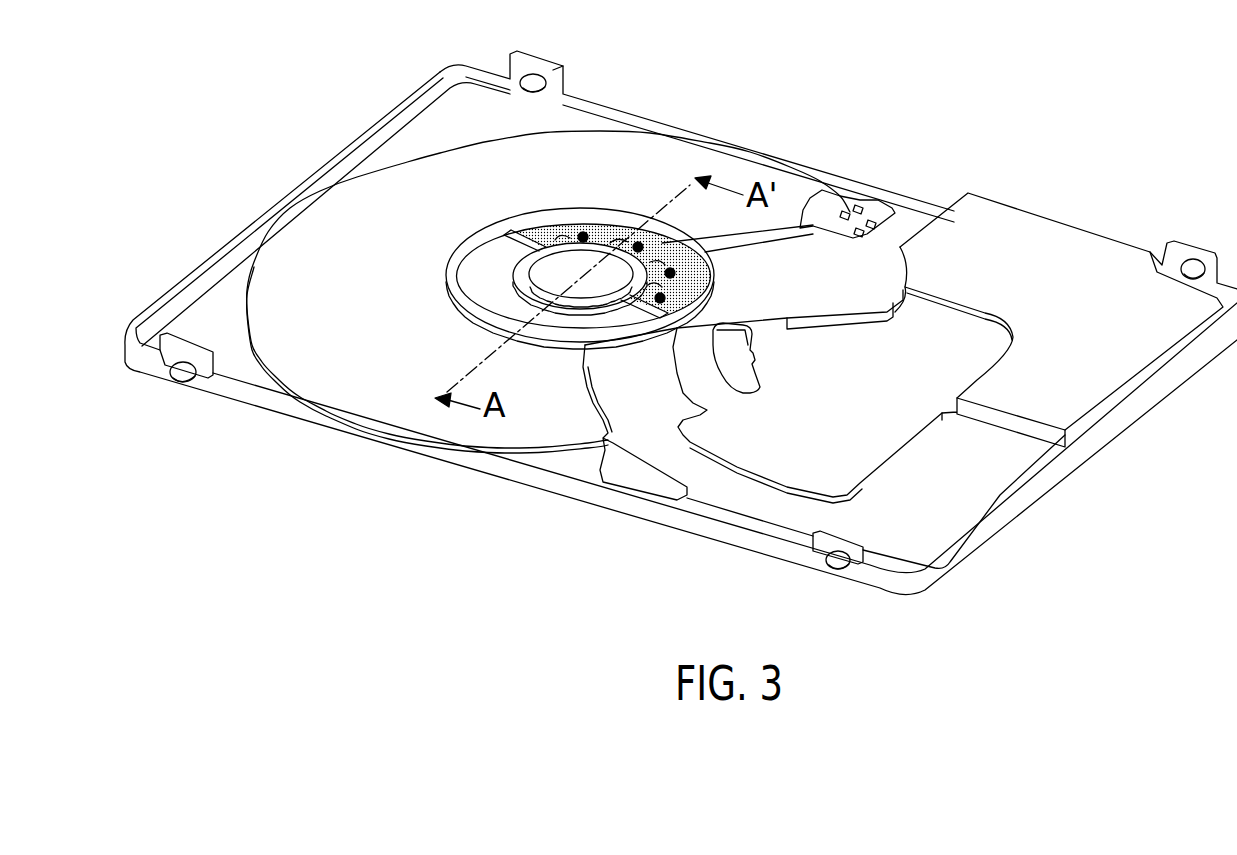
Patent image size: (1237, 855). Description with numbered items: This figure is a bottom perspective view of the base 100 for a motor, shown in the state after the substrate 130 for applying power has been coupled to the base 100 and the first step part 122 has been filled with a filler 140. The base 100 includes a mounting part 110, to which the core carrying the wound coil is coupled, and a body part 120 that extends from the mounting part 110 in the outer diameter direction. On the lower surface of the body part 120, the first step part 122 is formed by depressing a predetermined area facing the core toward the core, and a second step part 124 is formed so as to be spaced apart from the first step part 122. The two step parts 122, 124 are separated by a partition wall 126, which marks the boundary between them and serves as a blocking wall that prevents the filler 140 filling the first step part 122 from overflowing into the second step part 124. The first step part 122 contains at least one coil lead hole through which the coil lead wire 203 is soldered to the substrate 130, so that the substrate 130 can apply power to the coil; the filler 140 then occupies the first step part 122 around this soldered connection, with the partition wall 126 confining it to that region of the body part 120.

The base for a motor 100 is at (1017, 194).
The mounting part 110 is at (623, 265).
The body part 120 is at (390, 395).
The first step part 122 is at (600, 233).
The second step part 124 is at (488, 282).
The partition wall 126 is at (530, 230).
The filler 140 is at (538, 228).
The coil lead wire 203 is at (568, 233).
The substrate for applying power 130 is at (800, 228).